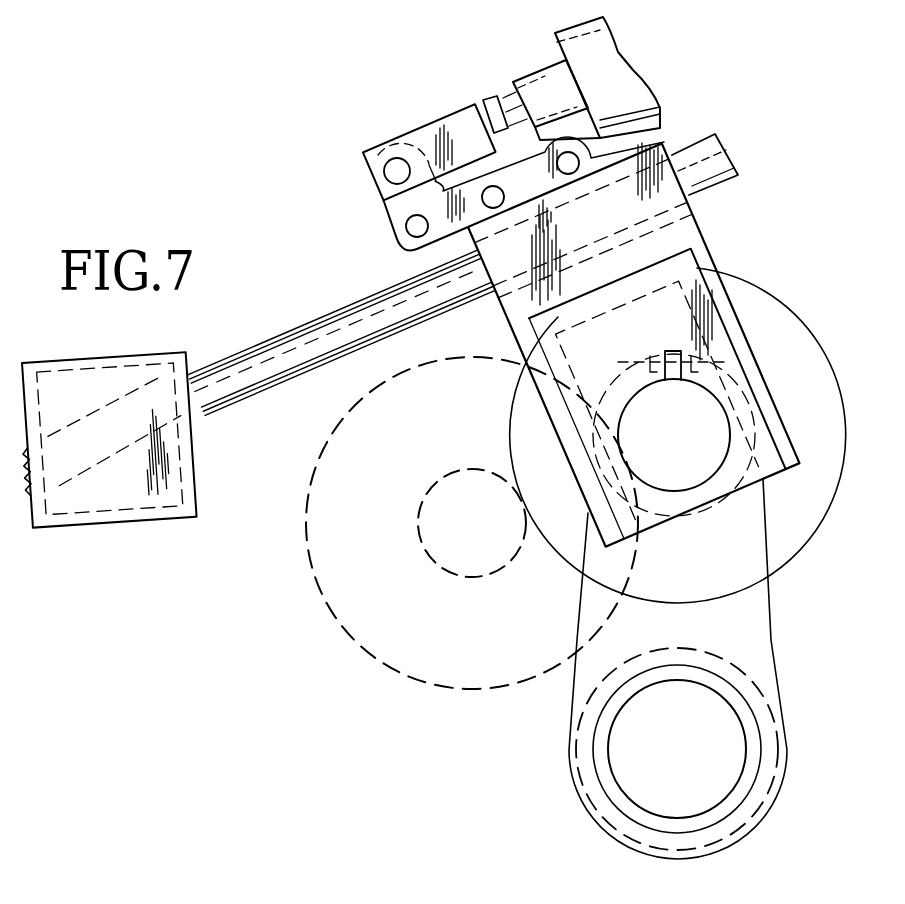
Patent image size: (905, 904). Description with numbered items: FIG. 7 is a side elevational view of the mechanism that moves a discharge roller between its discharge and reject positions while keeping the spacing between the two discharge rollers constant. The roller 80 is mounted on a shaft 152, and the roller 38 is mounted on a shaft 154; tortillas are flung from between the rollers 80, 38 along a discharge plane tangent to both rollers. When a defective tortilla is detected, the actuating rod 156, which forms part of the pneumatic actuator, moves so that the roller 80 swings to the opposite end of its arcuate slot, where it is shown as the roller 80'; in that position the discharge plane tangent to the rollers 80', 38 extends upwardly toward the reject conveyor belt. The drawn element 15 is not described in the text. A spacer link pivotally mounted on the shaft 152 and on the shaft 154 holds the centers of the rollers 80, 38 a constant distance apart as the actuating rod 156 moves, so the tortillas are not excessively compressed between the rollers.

The pivot arm 15 is at (773, 613).
The roller 38 is at (763, 691).
The roller 80 is at (678, 435).
The roller 80' is at (472, 542).
The shaft 152 is at (700, 412).
The shaft 154 is at (717, 775).
The actuating rod 156 is at (300, 342).